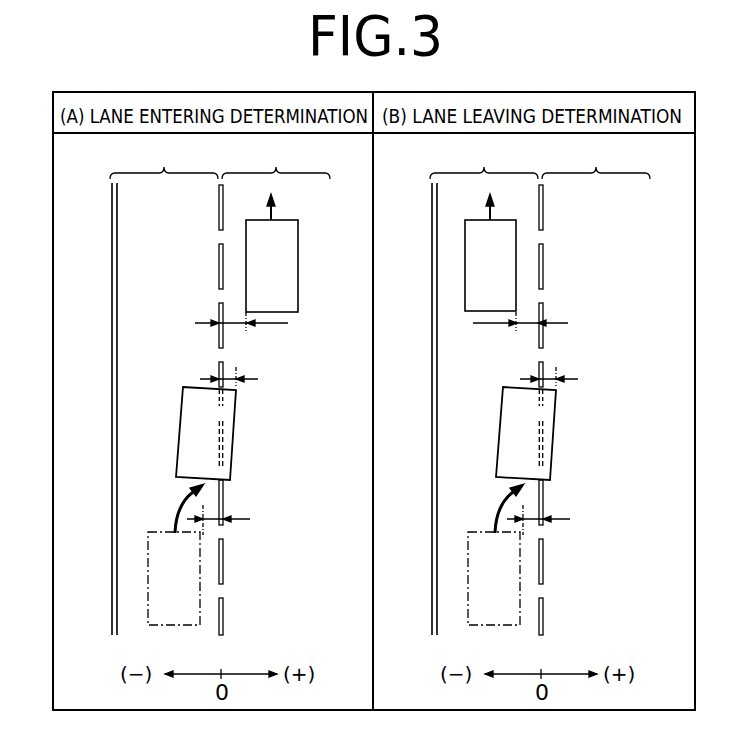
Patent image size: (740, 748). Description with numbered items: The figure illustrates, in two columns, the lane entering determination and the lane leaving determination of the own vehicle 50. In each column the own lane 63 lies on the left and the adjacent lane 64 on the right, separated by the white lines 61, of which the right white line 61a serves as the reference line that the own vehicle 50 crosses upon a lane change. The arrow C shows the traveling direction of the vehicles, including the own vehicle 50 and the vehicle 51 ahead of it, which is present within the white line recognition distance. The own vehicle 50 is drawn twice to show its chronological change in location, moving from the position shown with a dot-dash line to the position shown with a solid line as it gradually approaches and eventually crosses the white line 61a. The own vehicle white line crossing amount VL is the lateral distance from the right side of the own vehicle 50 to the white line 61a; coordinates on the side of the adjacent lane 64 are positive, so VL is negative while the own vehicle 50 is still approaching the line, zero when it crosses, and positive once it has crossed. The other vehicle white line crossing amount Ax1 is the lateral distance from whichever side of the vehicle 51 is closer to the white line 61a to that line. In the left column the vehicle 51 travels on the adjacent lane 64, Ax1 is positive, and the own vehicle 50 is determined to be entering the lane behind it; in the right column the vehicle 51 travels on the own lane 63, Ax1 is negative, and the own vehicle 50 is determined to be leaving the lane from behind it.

The own vehicle 50 is at (233, 432).
The vehicle ahead of the own vehicle 51 is at (298, 256).
The white lines 61 is at (218, 627).
The right white line 61a is at (224, 572).
The own lane 63 is at (324, 161).
The adjacent lane 64 is at (436, 161).
The traveling direction C is at (273, 214).
The own vehicle white line crossing amount VL is at (237, 372).
The other vehicle white line crossing amount Ax1 is at (223, 320).